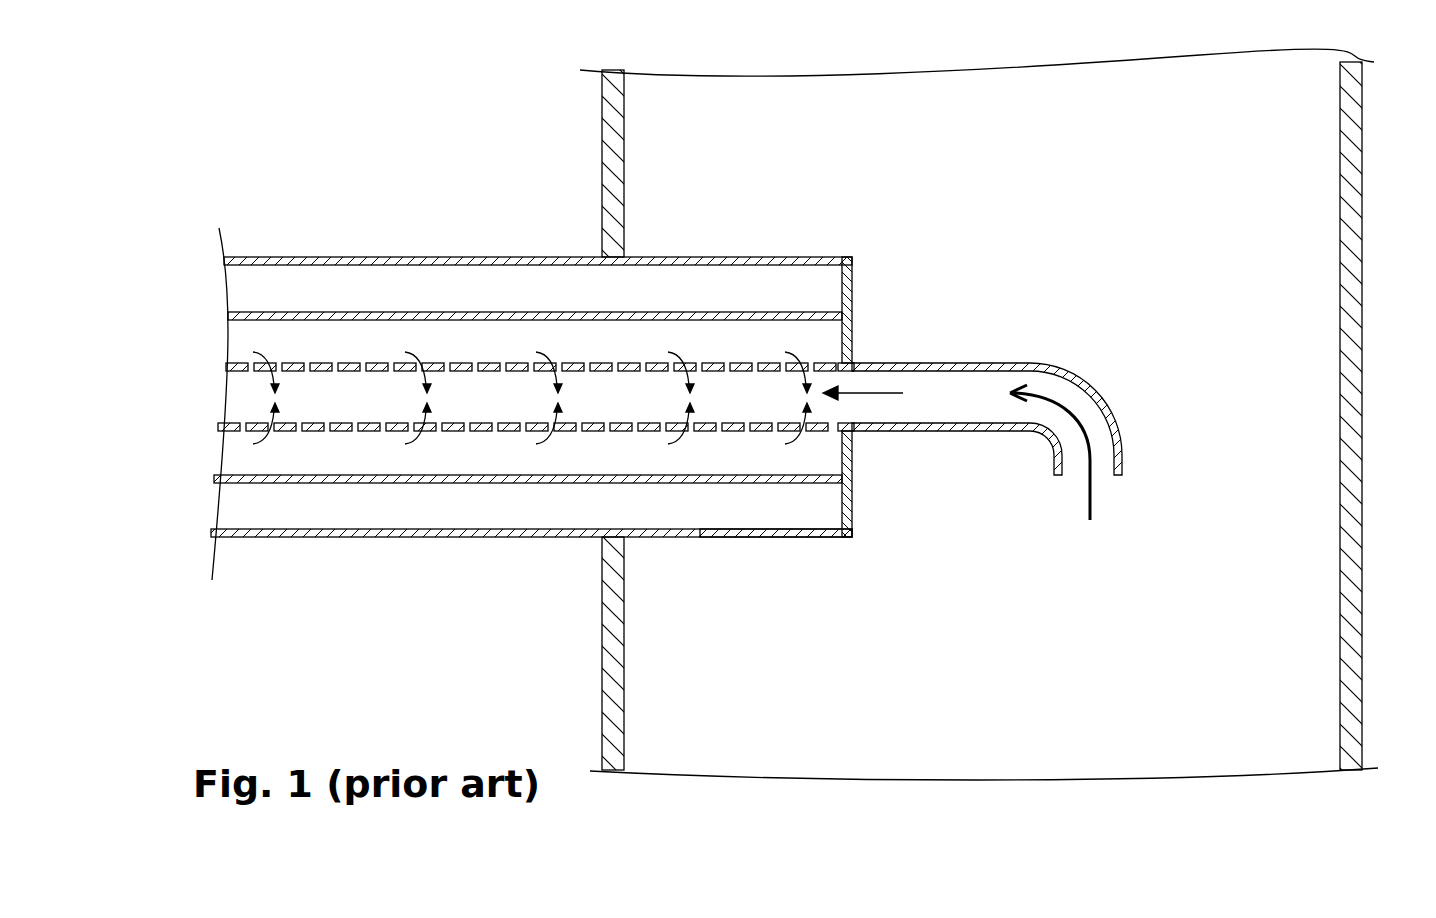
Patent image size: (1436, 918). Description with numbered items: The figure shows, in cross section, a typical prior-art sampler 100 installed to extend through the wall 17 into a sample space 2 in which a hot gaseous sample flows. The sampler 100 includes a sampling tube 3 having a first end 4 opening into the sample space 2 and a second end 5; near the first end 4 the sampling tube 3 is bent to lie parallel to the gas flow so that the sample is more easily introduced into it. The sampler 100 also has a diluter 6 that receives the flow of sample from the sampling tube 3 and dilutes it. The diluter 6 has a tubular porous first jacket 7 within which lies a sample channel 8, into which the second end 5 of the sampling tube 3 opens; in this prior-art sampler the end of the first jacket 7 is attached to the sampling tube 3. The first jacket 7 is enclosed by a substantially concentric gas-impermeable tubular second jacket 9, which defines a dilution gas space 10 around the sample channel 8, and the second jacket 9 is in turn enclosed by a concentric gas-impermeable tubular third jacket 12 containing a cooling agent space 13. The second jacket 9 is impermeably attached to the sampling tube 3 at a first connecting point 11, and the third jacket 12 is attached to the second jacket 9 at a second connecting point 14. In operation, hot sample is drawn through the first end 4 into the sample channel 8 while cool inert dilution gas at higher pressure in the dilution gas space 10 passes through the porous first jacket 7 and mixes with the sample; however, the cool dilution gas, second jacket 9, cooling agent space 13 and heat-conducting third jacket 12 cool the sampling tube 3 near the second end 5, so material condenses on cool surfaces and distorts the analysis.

The sampler 100 is at (392, 177).
The sample space 2 is at (1278, 235).
The sampling tube 3 is at (980, 362).
The first end 4 is at (1123, 485).
The second end 5 is at (842, 432).
The diluter 6 is at (730, 537).
The first jacket 7 is at (602, 432).
The sample channel 8 is at (330, 403).
The second jacket 9 is at (487, 483).
The dilution gas space 10 is at (347, 333).
The first connecting point 11 is at (853, 360).
The third jacket 12 is at (357, 540).
The cooling agent space 13 is at (565, 287).
The second connecting point 14 is at (850, 307).
The wall 17 is at (613, 630).